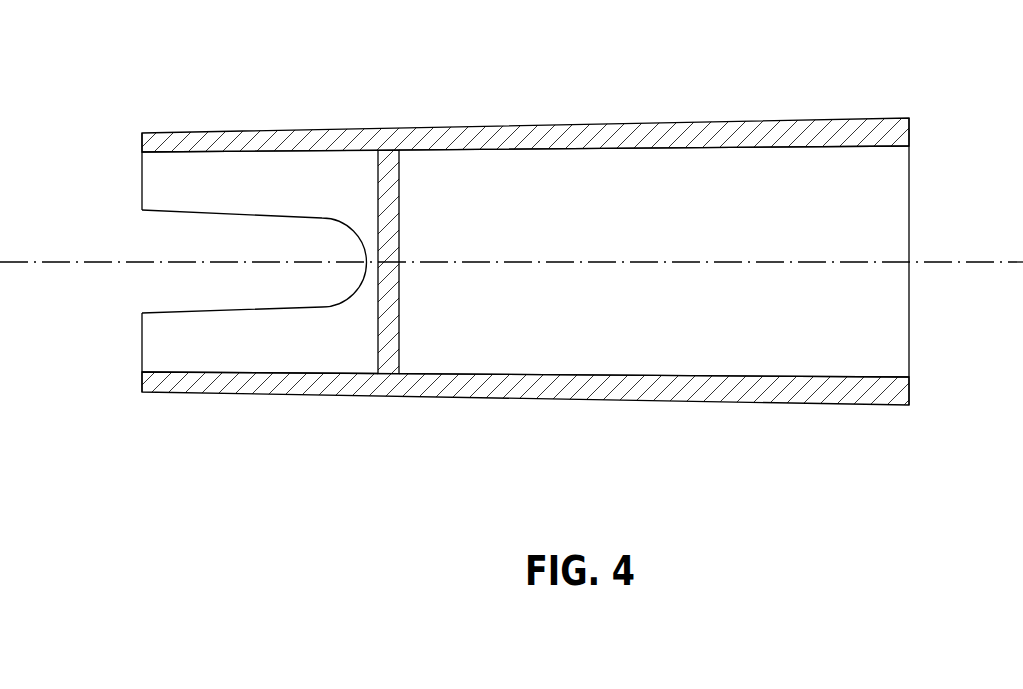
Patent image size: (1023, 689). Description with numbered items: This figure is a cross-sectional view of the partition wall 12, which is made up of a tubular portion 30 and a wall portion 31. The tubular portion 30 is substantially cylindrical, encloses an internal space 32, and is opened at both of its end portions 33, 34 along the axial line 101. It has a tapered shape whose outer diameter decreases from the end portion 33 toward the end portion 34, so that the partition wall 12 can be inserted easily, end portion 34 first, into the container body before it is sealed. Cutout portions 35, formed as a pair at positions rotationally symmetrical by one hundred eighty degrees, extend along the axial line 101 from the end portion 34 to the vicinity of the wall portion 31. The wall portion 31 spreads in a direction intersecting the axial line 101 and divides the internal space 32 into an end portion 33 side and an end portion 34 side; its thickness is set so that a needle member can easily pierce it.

The partition wall 12 is at (864, 81).
The tubular portion 30 is at (640, 122).
The wall portion 31 is at (388, 222).
The internal space 32 is at (329, 162).
The end portion 33 is at (909, 304).
The end portion 34 is at (141, 178).
The cutout portion 35 is at (157, 245).
The axial line 101 is at (993, 251).